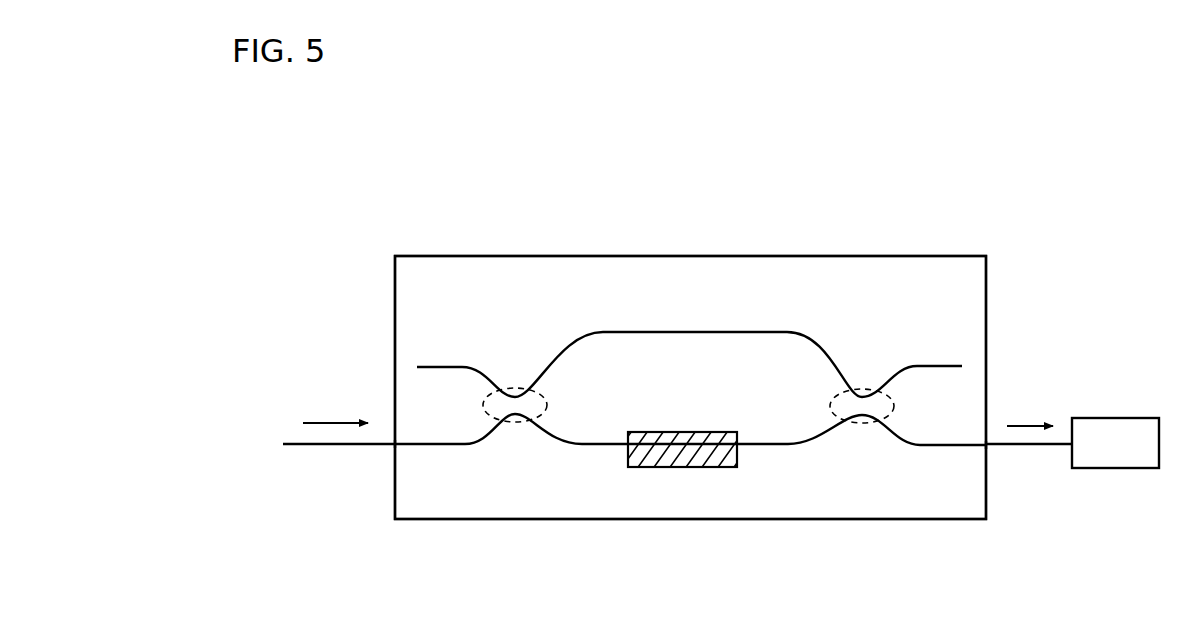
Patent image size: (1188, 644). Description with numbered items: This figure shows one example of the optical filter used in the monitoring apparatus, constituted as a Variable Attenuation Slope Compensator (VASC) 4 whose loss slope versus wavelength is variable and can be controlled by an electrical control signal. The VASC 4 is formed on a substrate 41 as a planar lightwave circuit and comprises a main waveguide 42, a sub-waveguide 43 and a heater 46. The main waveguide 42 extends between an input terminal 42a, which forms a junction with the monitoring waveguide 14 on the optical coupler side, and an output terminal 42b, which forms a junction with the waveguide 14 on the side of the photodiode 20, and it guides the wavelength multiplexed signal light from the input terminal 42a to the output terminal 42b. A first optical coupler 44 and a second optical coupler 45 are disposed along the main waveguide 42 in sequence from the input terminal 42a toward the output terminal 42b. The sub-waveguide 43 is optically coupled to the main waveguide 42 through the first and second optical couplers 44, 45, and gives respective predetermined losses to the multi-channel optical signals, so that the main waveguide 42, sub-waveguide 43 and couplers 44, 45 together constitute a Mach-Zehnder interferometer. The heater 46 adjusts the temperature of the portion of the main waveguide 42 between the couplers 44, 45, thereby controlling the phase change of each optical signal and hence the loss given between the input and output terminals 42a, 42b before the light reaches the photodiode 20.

The Variable Attenuation Slope Compensator (VASC) 4 is at (912, 196).
The substrate 41 is at (573, 276).
The main waveguide 42 is at (778, 452).
The input terminal 42a is at (395, 445).
The output terminal 42b is at (985, 455).
The sub-waveguide 43 is at (733, 330).
The first optical coupler 44 is at (515, 386).
The second optical coupler 45 is at (870, 387).
The heater 46 is at (685, 467).
The monitoring waveguide 14 is at (320, 444).
The photodiode 20 is at (1112, 418).